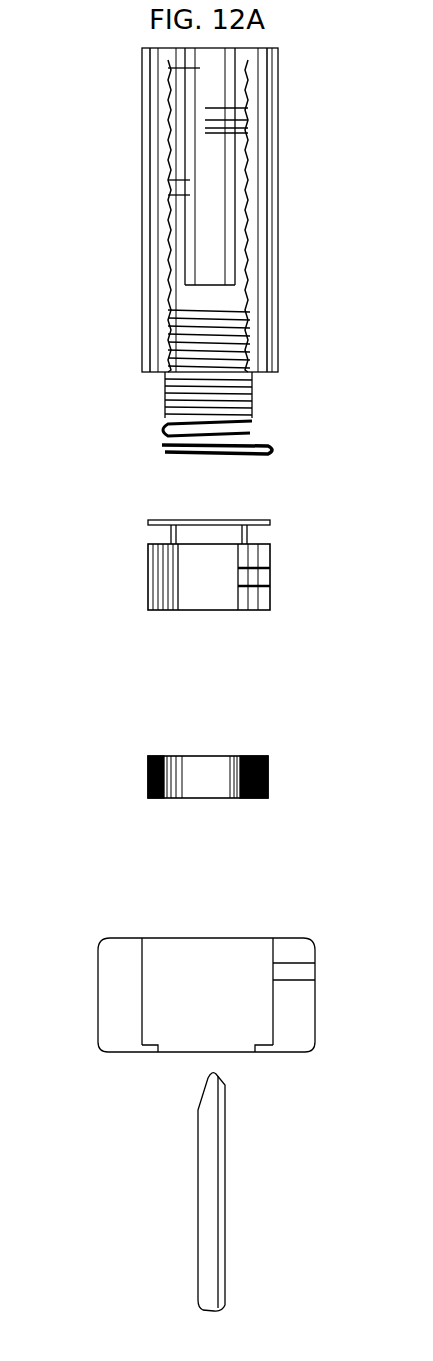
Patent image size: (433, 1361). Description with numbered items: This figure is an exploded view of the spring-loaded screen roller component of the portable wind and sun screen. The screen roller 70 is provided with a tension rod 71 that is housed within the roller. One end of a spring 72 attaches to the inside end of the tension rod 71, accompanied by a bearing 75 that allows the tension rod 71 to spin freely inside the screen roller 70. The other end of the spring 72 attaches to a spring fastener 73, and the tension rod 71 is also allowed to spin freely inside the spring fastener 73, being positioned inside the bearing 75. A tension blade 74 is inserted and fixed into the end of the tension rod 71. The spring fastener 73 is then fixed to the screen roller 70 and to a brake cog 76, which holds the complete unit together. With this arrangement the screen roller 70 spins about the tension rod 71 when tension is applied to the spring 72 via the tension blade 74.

The screen roller 70 is at (150, 122).
The tension rod 71 is at (232, 195).
The spring 72 is at (183, 402).
The spring fastener 73 is at (182, 570).
The tension blade 74 is at (208, 1193).
The bearing 75 is at (165, 770).
The brake cog 76 is at (115, 957).